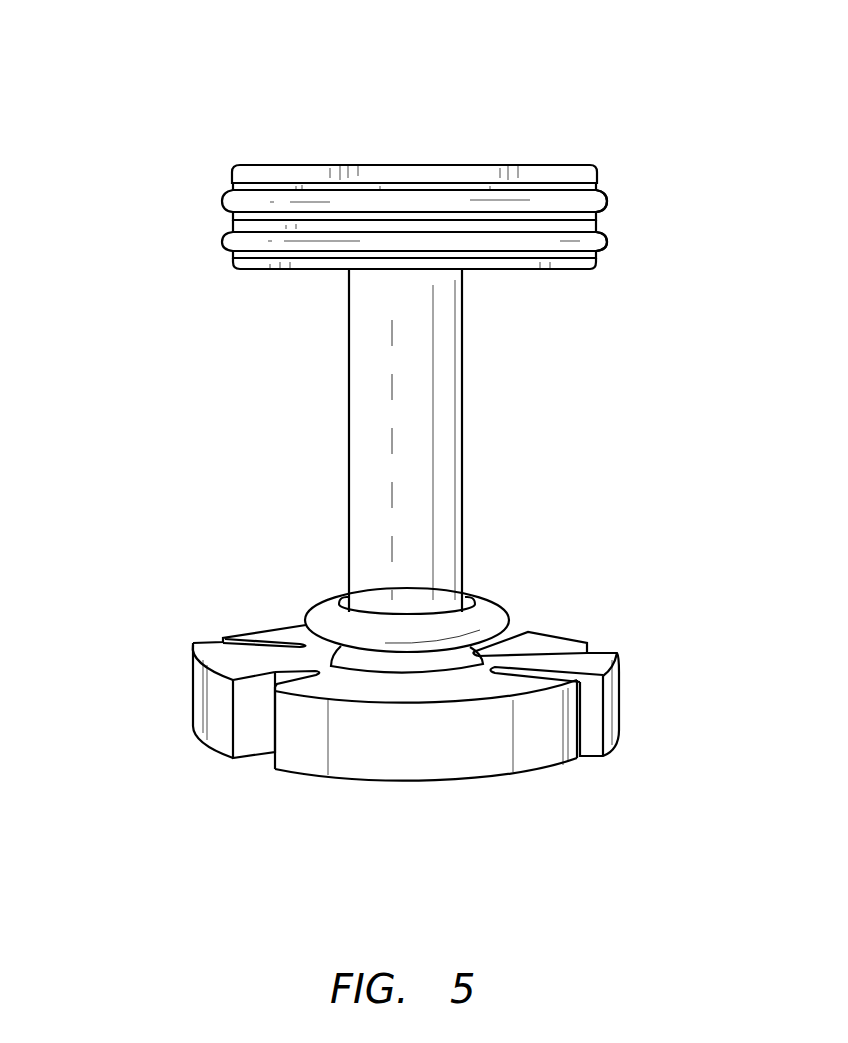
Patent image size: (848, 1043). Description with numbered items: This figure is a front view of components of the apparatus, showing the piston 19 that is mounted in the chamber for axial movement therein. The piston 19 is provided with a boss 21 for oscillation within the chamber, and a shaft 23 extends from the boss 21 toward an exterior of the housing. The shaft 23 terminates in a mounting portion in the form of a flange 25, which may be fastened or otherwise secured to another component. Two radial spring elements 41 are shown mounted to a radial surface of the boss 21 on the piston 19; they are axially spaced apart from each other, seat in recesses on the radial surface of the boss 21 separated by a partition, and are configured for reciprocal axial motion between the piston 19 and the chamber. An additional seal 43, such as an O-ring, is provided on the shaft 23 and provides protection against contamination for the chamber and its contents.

The piston 19 is at (110, 55).
The boss 21 is at (312, 172).
The shaft 23 is at (355, 367).
The flange 25 is at (192, 648).
The radial spring element 41 is at (605, 195).
The seal 43 is at (508, 605).